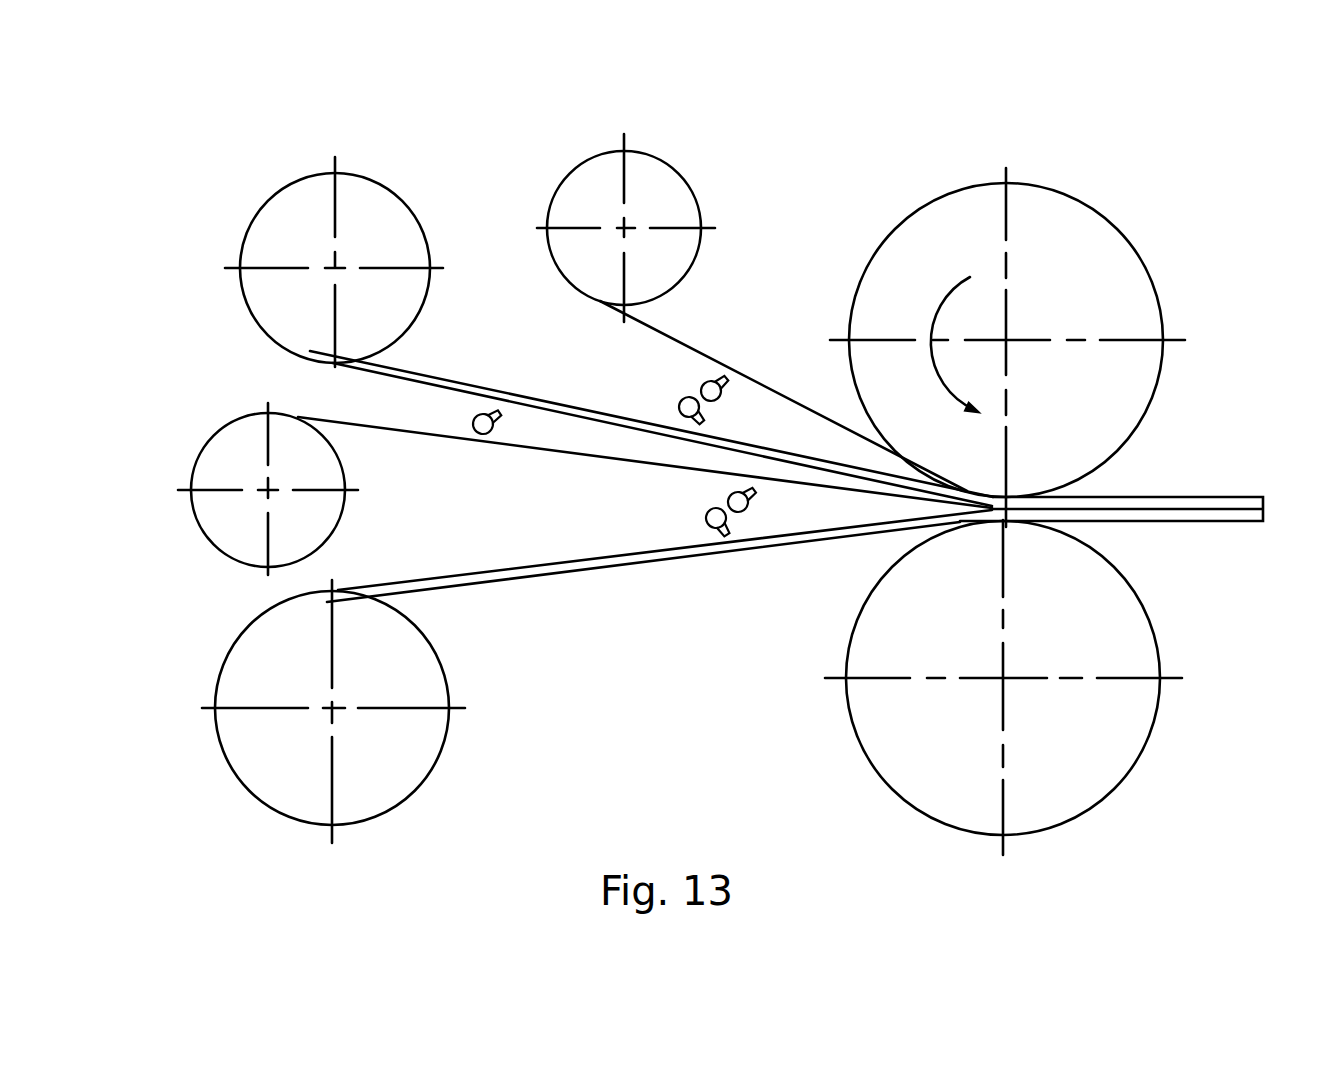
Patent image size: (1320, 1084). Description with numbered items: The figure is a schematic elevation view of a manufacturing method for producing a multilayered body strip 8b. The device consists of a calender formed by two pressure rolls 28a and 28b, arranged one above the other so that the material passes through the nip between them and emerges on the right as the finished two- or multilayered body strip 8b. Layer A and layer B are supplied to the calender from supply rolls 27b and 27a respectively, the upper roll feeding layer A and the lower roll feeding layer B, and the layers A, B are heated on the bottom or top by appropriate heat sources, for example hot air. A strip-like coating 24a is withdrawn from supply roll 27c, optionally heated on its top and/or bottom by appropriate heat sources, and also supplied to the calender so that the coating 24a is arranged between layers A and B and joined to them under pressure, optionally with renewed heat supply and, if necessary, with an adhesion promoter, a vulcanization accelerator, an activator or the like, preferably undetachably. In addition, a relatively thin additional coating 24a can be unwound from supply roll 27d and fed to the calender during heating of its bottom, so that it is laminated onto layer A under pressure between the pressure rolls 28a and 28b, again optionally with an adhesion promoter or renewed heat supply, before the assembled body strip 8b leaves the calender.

The supply roll 27a is at (385, 778).
The supply roll 27b is at (372, 220).
The supply roll 27c is at (312, 522).
The supply roll 27d is at (660, 198).
The coating 24a is at (700, 350).
The pressure roll 28a is at (1098, 255).
The pressure roll 28b is at (1125, 642).
The multilayered body strip 8b is at (1187, 503).
The layer A is at (432, 380).
The layer B is at (522, 570).